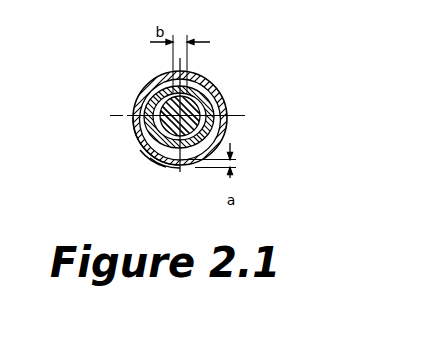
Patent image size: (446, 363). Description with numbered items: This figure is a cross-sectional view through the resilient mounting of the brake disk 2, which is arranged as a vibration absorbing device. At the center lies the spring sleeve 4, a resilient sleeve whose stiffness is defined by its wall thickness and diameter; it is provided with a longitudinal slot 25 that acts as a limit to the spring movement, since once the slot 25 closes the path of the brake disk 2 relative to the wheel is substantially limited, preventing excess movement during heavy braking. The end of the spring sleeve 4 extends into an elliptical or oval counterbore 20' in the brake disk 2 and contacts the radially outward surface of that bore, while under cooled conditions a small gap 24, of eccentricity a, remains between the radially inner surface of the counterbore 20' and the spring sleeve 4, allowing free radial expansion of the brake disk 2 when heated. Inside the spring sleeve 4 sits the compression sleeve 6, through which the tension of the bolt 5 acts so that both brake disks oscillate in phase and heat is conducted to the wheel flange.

The spring sleeve 4 is at (135, 88).
The compression sleeve 6 is at (157, 80).
The brake disk 2 is at (200, 76).
The longitudinal slot 25 is at (182, 72).
The bolt 5 is at (222, 92).
The elliptical or oval counterbore 20' is at (109, 163).
The gap 24 is at (158, 157).